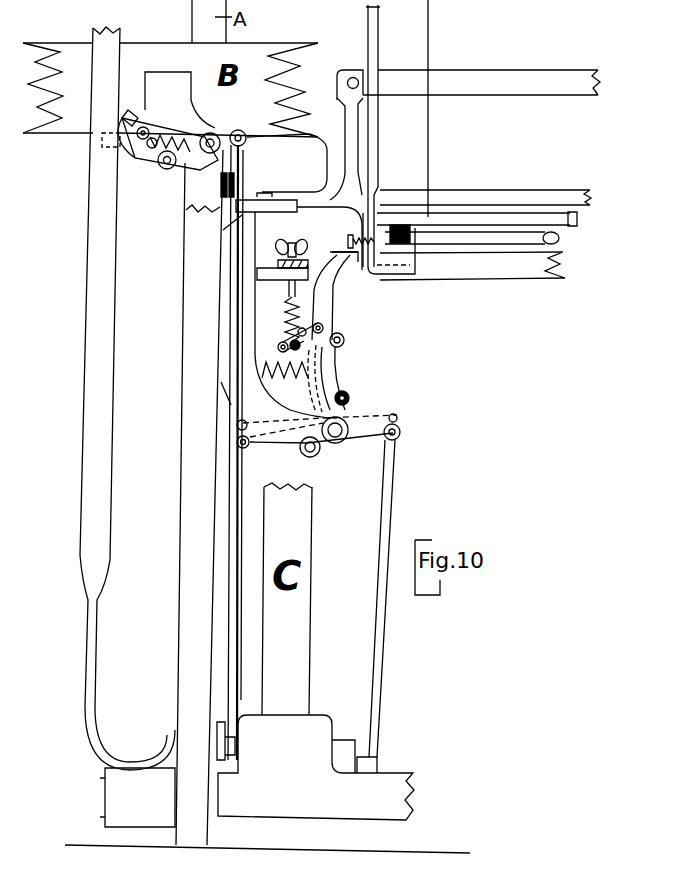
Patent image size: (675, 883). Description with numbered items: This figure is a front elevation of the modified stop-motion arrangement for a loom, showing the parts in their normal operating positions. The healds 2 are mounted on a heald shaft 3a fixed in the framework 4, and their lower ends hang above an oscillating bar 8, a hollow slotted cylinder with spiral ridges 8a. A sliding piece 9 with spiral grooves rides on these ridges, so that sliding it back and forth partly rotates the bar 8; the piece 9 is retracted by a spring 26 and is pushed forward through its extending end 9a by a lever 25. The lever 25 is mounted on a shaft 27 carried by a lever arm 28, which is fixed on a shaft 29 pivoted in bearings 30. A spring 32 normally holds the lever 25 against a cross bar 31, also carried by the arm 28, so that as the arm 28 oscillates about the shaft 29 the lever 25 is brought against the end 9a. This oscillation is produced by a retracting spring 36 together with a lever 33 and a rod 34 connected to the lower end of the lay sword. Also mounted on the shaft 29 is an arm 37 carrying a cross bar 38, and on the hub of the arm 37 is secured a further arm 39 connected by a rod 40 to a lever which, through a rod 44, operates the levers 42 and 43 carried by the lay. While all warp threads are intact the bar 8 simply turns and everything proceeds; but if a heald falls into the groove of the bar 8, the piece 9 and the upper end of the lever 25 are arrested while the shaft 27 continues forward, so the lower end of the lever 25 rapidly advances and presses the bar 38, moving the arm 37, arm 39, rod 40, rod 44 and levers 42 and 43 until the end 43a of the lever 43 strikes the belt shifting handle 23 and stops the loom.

The healds 2 is at (430, 140).
The heald shaft 3a is at (512, 197).
The framework 4 is at (483, 268).
The oscillating bar 8 is at (556, 239).
The spiral ridges 8a is at (378, 232).
The sliding piece 9 is at (403, 238).
The extending end of sliding piece 9a is at (363, 280).
The belt shifting handle 23 is at (100, 250).
The lever 25 is at (333, 317).
The spring 26 is at (357, 233).
The shaft 27 is at (345, 343).
The lever arm 28 is at (337, 370).
The shaft 29 is at (337, 433).
The bearings 30 is at (304, 312).
The cross bar 31 is at (343, 333).
The spring 32 is at (280, 319).
The lever 33 is at (400, 417).
The rod 34 is at (380, 642).
The retracting spring 36 is at (285, 379).
The arm 37 is at (353, 405).
The cross bar 38 is at (350, 396).
The arm 39 is at (265, 440).
The rod 40 is at (240, 633).
The lever 42 is at (237, 130).
The lever 43 is at (160, 167).
The end of lever 43a is at (128, 128).
The rod 44 is at (233, 627).